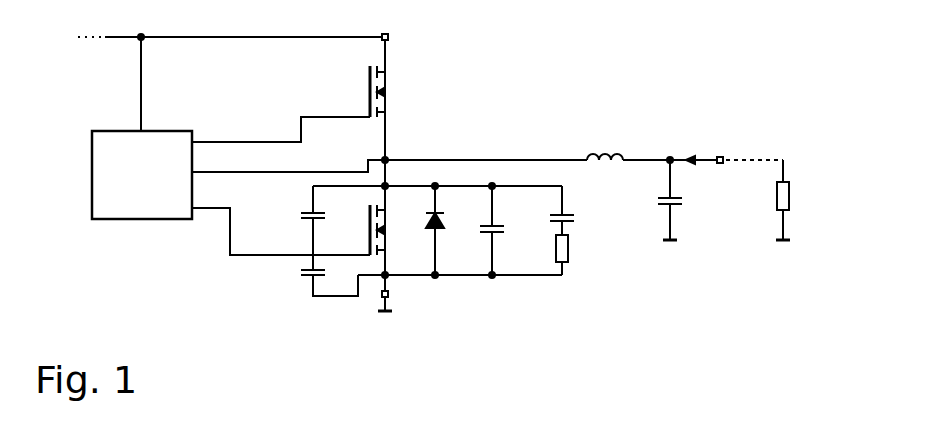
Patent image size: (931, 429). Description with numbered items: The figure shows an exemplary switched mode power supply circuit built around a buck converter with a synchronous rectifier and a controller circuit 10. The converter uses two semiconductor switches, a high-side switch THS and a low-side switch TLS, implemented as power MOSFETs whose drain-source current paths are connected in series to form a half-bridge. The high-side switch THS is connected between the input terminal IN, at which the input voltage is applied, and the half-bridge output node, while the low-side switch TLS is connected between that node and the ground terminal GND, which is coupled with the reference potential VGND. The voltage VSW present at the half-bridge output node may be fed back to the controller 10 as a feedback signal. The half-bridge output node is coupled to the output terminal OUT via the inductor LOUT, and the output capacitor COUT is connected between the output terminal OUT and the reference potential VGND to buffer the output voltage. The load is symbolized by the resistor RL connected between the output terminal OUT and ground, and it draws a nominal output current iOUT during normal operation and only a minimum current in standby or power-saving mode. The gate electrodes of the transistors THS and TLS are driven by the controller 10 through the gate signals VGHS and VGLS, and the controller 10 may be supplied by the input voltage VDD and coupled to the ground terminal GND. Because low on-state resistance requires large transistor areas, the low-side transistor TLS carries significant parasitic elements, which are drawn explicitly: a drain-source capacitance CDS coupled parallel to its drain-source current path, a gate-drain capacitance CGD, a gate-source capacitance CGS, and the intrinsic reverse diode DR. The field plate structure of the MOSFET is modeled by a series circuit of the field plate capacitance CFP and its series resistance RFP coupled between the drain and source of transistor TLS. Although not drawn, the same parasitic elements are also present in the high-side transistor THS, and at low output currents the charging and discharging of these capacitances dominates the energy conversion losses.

The controller circuit 10 is at (143, 188).
The high-side semiconductor switch THS is at (361, 91).
The low-side semiconductor switch TLS is at (362, 230).
The gate-drain parasitic capacitance CGD is at (299, 220).
The gate-source capacitance CGS is at (315, 278).
The intrinsic reverse diode DR is at (424, 230).
The drain-source parasitic capacitance CDS is at (479, 230).
The field plate capacitance CFP is at (547, 213).
The field plate series resistance RFP is at (545, 255).
The inductor LOUT is at (610, 141).
The output capacitor COUT is at (651, 200).
The load resistor RL is at (796, 200).
The input terminal IN is at (384, 26).
The output terminal OUT is at (737, 145).
The ground terminal GND is at (406, 298).
The input voltage VDD is at (141, 37).
The half-bridge output node voltage VSW is at (385, 160).
The high-side gate voltage VGHS is at (281, 129).
The low-side gate voltage VGLS is at (281, 218).
The reference potential VGND is at (383, 298).
The output current iOUT is at (684, 145).